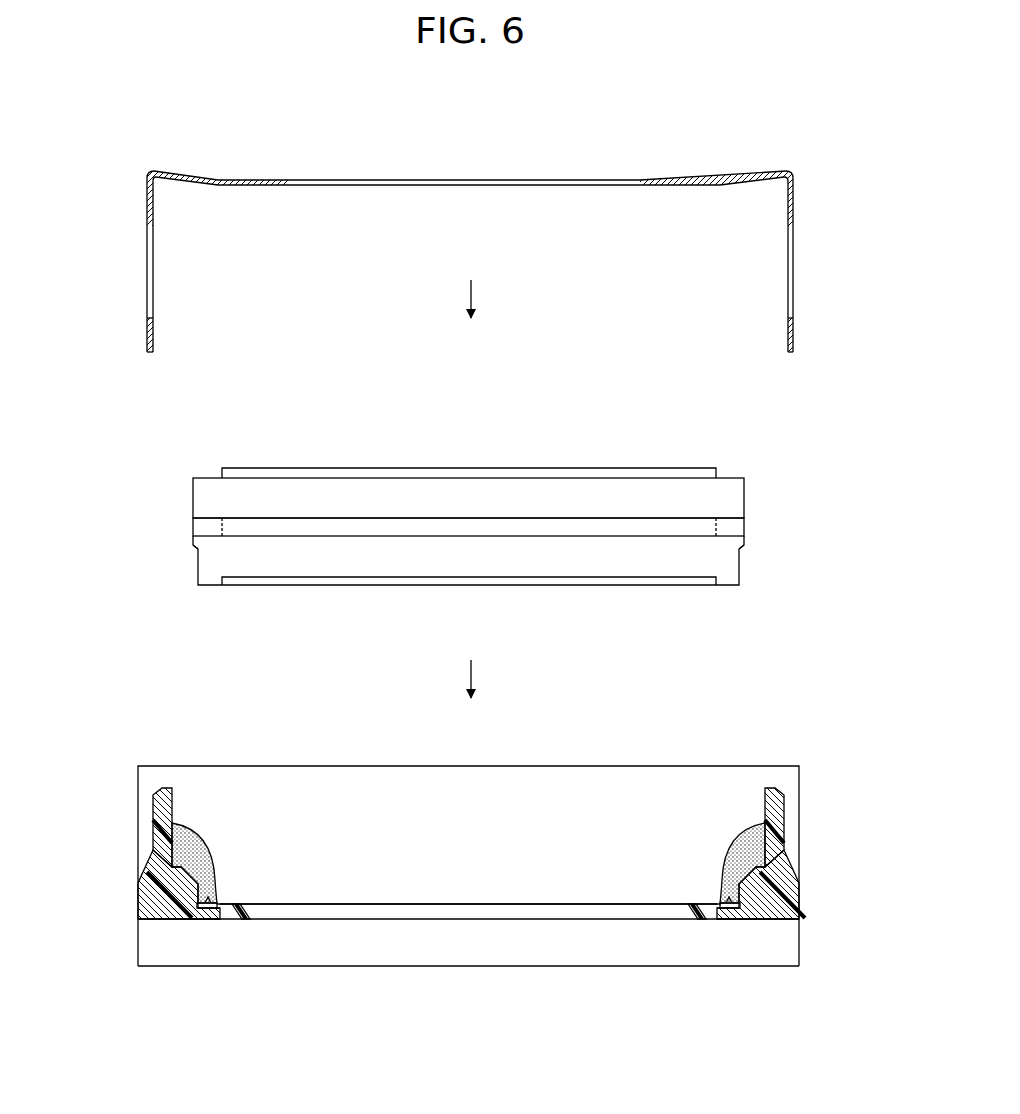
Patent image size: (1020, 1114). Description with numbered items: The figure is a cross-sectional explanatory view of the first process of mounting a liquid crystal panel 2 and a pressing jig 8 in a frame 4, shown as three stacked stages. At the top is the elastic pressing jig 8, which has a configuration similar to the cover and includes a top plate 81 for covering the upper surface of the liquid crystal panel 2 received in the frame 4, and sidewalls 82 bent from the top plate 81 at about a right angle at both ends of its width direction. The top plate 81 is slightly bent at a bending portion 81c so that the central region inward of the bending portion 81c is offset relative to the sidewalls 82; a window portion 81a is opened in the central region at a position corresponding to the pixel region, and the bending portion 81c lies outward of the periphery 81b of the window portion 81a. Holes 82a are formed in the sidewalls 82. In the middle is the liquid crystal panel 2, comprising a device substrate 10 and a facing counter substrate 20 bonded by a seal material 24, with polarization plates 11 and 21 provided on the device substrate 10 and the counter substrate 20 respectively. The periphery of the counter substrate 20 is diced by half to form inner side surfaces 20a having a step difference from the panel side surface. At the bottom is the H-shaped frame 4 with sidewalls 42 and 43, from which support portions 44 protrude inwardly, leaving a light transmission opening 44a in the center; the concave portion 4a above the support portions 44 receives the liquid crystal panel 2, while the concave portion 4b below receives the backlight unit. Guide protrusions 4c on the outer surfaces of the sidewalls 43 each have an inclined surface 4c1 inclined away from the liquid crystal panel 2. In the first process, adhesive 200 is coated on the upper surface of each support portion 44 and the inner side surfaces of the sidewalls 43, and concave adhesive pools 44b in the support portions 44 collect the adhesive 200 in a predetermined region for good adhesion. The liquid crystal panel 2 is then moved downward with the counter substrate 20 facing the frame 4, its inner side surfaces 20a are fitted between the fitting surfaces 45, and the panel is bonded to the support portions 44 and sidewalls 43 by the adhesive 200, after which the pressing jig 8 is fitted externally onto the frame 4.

The pressing jig 8 is at (142, 160).
The top plate 81 is at (750, 173).
The window portion 81a is at (645, 178).
The periphery of the window portion 81b is at (253, 180).
The bending portion 81c is at (208, 188).
The sidewall of pressing jig 82 is at (146, 212).
The hole 82a is at (147, 232).
The liquid crystal panel 2 is at (278, 450).
The device substrate 10 is at (352, 492).
The polarization plate 11 is at (485, 470).
The seal material 24 is at (418, 525).
The counter substrate 20 is at (380, 558).
The inner side surface 20a is at (197, 560).
The polarization plate 21 is at (590, 582).
The frame 4 is at (246, 757).
The concave portion 4a is at (341, 820).
The concave portion 4b is at (568, 950).
The guide protrusion 4c is at (146, 908).
The inclined surface 4c1 is at (152, 858).
The sidewall 42 is at (660, 775).
The sidewall 43 is at (162, 810).
The support portion 44 is at (246, 908).
The light transmission opening 44a is at (390, 912).
The adhesive pool 44b is at (210, 908).
The fitting surface 45 is at (203, 893).
The adhesive 200 is at (205, 845).